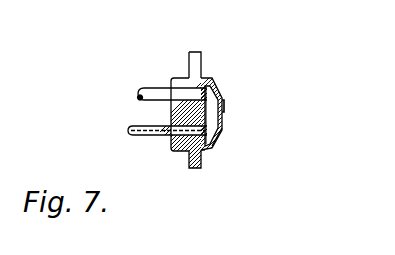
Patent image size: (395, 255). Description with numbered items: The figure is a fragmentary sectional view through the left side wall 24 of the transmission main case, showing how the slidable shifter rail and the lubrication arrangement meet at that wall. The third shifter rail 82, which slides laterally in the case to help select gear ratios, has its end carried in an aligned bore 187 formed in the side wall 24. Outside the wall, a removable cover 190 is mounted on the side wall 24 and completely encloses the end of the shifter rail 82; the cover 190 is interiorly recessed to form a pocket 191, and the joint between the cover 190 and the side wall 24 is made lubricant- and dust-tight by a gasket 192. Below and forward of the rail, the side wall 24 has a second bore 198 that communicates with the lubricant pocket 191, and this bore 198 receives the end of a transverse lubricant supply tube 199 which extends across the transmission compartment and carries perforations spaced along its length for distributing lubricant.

The left side wall 24 is at (203, 63).
The third shifter rail 82 is at (148, 93).
The aligned bore 187 is at (218, 90).
The cover 190 is at (218, 137).
The pocket 191 is at (208, 118).
The gasket 192 is at (205, 150).
The second bore 198 is at (183, 152).
The lubricant supply tube 199 is at (128, 127).